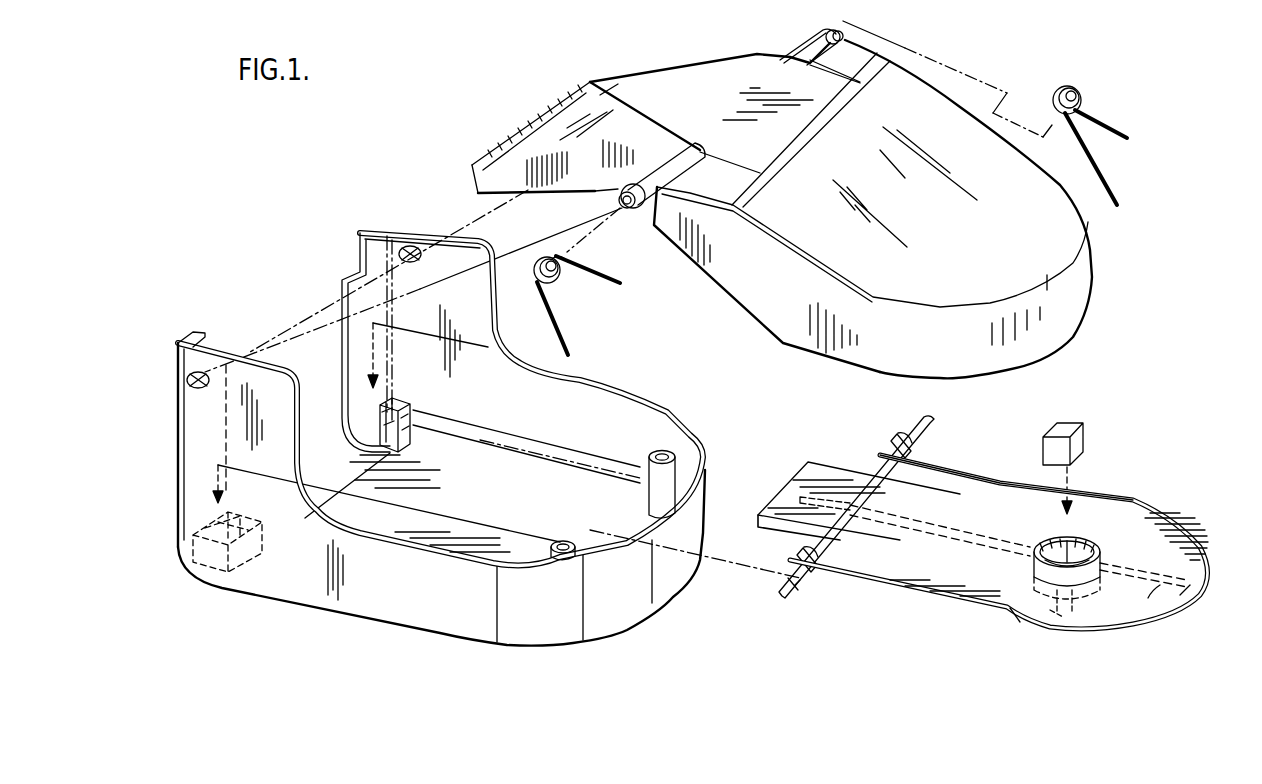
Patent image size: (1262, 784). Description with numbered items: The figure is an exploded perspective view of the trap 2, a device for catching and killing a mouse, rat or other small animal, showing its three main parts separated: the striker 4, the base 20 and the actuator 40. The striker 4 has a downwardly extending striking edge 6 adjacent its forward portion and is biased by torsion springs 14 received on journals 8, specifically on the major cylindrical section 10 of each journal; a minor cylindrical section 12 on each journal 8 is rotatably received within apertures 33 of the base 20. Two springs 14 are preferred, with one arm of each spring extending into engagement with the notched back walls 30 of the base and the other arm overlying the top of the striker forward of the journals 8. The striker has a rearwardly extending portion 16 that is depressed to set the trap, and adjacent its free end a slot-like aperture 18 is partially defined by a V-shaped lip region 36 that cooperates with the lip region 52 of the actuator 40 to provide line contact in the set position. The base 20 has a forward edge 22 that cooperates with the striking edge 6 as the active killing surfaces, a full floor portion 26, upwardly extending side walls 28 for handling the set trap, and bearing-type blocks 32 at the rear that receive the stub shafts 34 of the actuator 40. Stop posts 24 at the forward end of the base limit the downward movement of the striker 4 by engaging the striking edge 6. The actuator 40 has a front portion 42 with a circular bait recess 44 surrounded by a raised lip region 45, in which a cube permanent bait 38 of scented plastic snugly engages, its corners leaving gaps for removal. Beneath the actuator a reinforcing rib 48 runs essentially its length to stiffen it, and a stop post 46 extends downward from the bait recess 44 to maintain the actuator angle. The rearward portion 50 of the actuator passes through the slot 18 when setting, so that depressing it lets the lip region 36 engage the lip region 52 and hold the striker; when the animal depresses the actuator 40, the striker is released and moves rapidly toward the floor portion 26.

The trap 2 is at (1150, 396).
The striker 4 is at (1058, 237).
The striking edge 6 is at (1070, 311).
The journals 8 is at (763, 41).
The major cylindrical section 10 is at (815, 46).
The minor cylindrical section 12 is at (847, 31).
The torsion springs 14 is at (563, 287).
The rearwardly extending portion 16 is at (633, 105).
The slot-like aperture 18 is at (537, 126).
The base 20 is at (652, 573).
The forward edge 22 is at (705, 467).
The stop posts 24 is at (660, 451).
The floor portion 26 is at (575, 494).
The side walls 28 is at (300, 512).
The back walls 30 is at (357, 341).
The bearing-type blocks 32 is at (400, 444).
The apertures 33 is at (187, 378).
The stub shafts 34 is at (931, 425).
The lip region 36 is at (520, 147).
The cube permanent bait 38 is at (1062, 422).
The actuator 40 is at (1102, 640).
The front portion 42 is at (1150, 600).
The bait recess 44 is at (1088, 548).
The raised lip region 45 is at (1077, 530).
The stop post 46 is at (1022, 628).
The reinforcing rib 48 is at (1173, 587).
The rearward portion 50 is at (822, 472).
The lip region 52 is at (767, 530).